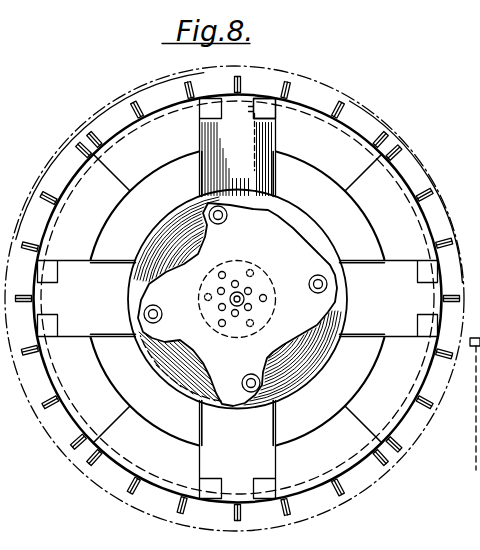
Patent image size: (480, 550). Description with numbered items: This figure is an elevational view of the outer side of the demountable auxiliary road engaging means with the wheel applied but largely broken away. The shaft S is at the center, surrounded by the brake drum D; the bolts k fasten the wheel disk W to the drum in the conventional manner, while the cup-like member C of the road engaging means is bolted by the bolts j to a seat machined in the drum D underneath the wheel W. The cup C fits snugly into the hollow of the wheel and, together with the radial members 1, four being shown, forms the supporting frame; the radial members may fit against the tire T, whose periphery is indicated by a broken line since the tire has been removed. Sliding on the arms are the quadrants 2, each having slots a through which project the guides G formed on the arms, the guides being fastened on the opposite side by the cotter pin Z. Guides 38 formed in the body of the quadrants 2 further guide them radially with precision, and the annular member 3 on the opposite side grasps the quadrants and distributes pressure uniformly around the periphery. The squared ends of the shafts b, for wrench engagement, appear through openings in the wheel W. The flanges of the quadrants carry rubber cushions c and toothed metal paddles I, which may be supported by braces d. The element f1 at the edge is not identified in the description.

The brace d is at (173, 99).
The rubber cushion c is at (76, 150).
The metal paddle I is at (78, 151).
The cotter pin Z is at (288, 93).
The guide G is at (262, 116).
The slot a is at (255, 144).
The tire T is at (432, 177).
The radial member 1 is at (443, 298).
The shaft b is at (327, 285).
The wheel W is at (282, 219).
The brake drum D is at (252, 287).
The bolt j is at (268, 307).
The bolt k is at (253, 304).
The shaft S is at (232, 311).
The cup-like member C is at (186, 394).
The guide 38 is at (276, 434).
The quadrant 2 is at (384, 344).
The annular member 3 is at (363, 382).
The adjacent element f1 is at (466, 412).